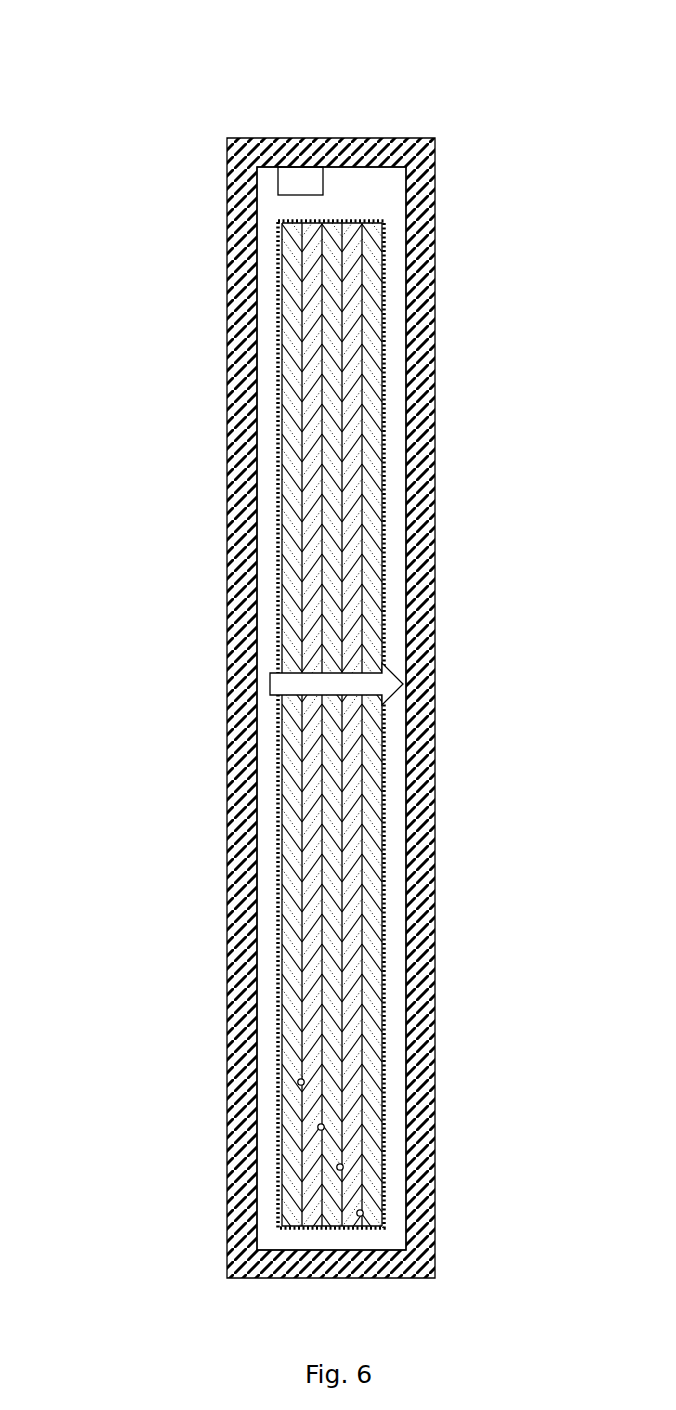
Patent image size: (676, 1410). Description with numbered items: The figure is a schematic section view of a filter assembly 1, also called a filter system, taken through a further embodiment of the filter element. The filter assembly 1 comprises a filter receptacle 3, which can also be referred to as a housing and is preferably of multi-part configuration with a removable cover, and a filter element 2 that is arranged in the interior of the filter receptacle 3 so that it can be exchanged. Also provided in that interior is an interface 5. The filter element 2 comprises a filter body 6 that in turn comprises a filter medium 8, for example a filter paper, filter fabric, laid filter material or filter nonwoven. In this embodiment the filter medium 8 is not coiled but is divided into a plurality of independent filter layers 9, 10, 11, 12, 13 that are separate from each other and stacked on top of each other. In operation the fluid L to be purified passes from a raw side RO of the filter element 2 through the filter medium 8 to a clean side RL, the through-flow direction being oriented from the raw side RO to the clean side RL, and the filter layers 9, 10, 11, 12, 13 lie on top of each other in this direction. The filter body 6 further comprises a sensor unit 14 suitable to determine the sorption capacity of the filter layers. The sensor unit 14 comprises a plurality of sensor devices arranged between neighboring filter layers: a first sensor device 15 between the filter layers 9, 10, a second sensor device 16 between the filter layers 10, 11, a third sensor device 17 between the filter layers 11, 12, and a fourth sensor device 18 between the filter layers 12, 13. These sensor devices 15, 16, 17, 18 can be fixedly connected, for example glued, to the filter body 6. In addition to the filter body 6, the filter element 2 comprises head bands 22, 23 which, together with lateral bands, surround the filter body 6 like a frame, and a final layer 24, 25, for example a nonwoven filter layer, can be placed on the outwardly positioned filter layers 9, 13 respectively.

The filter assembly 1 is at (318, 82).
The filter element 2 is at (378, 194).
The filter receptacle 3 is at (435, 198).
The interface 5 is at (296, 178).
The filter body 6 is at (392, 334).
The filter medium 8 is at (120, 317).
The filter layer 9 is at (375, 560).
The filter layer 10 is at (352, 513).
The filter layer 11 is at (330, 460).
The filter layer 12 is at (312, 418).
The filter layer 13 is at (290, 377).
The sensor unit 14 is at (135, 1008).
The first sensor device 15 is at (356, 1213).
The second sensor device 16 is at (336, 1167).
The third sensor device 17 is at (317, 1127).
The fourth sensor device 18 is at (297, 1082).
The head band 22 is at (335, 220).
The head band 23 is at (345, 1229).
The final layer 24 is at (277, 903).
The final layer 25 is at (385, 903).
The fluid L is at (270, 683).
The raw side RO is at (265, 778).
The clean side RL is at (395, 778).